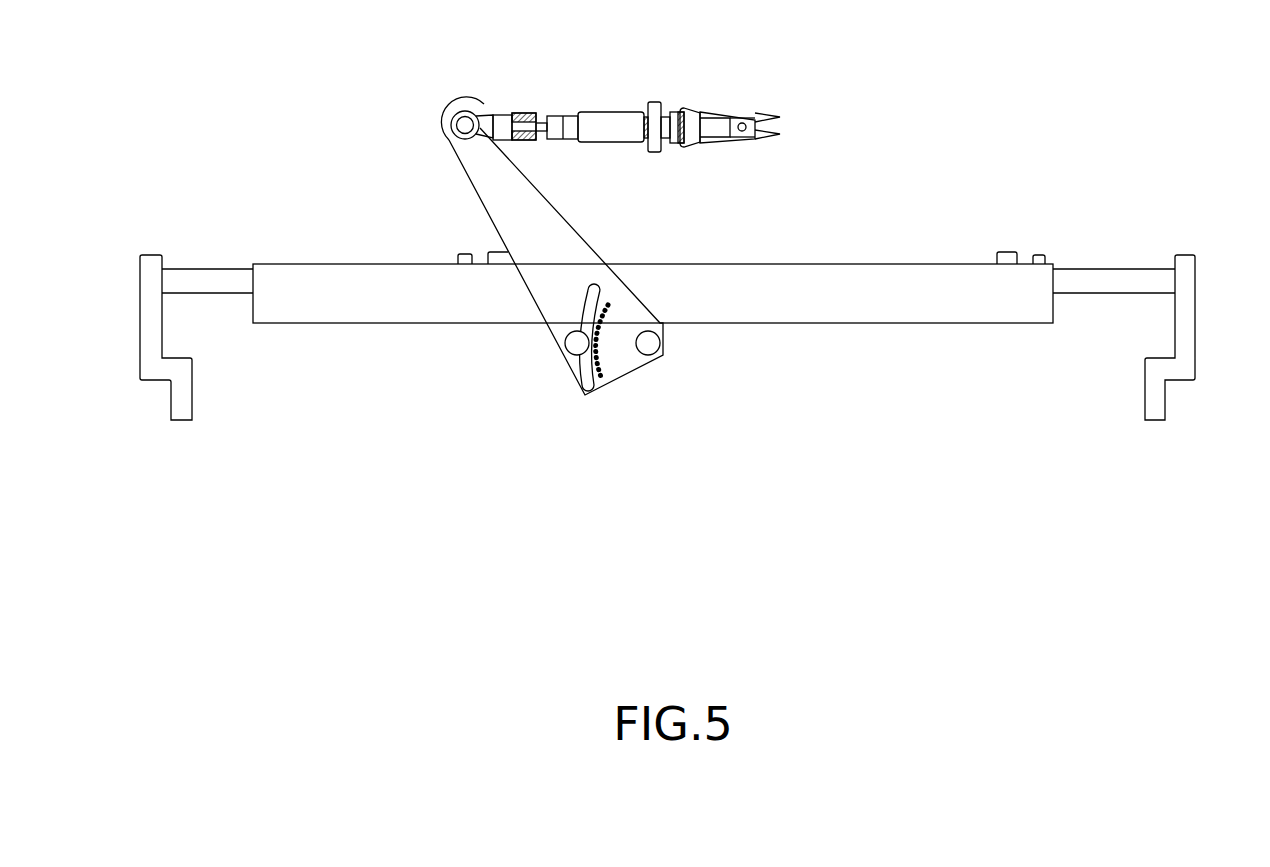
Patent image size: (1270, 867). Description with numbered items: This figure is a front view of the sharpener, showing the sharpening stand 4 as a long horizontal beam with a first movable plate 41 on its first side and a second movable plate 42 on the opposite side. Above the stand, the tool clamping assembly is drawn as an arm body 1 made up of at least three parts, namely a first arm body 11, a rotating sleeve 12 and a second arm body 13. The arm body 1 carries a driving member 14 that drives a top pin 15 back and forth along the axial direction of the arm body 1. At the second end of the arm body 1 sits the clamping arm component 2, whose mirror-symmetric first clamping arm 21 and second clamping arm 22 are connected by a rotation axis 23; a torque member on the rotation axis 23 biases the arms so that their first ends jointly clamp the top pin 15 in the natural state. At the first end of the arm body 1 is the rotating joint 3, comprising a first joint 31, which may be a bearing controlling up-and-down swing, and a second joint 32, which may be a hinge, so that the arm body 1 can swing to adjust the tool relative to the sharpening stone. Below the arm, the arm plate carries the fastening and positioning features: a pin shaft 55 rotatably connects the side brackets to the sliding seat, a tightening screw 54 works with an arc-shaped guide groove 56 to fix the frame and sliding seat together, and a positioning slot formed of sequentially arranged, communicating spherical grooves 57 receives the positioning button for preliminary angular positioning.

The arm body 1 is at (631, 76).
The first arm body 11 is at (542, 116).
The rotating sleeve 12 is at (652, 102).
The second arm body 13 is at (593, 118).
The driving member 14 is at (668, 118).
The top pin 15 is at (709, 98).
The clamping arm component 2 is at (782, 138).
The first clamping arm 21 is at (758, 115).
The second clamping arm 22 is at (758, 134).
The rotation axis 23 is at (741, 131).
The rotating joint 3 is at (493, 70).
The first joint 31 is at (466, 104).
The second joint 32 is at (525, 113).
The sharpening stand 4 is at (803, 292).
The first movable plate 41 is at (1183, 338).
The second movable plate 42 is at (150, 352).
The tightening screws 54 is at (577, 345).
The pin shaft 55 is at (648, 347).
The arc-shaped guide groove 56 is at (584, 392).
The spherical grooves 57 is at (603, 372).